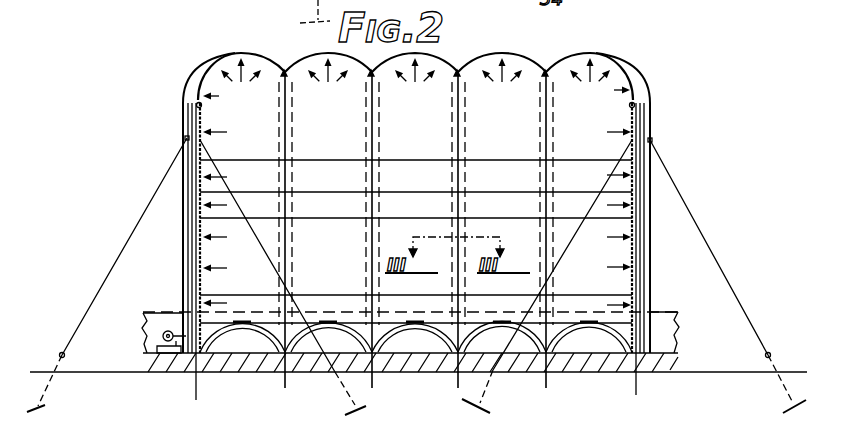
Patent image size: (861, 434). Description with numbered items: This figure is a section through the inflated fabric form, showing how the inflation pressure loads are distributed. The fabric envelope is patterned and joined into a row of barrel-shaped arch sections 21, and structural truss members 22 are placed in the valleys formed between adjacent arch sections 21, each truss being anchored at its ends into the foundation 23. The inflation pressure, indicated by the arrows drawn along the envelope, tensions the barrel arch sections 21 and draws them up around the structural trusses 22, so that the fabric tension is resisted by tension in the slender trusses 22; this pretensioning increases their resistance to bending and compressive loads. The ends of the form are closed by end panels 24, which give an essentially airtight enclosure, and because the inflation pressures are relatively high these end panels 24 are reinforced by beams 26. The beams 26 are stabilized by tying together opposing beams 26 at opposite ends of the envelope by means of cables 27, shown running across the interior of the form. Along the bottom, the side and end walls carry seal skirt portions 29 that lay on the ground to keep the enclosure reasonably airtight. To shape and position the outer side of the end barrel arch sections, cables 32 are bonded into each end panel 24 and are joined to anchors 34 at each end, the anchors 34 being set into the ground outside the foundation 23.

The barrel-shaped arch sections 21 is at (303, 55).
The structural truss members 22 is at (548, 68).
The foundation 23 is at (660, 364).
The end panels 24 is at (198, 226).
The beams 26 is at (188, 273).
The cables 27 is at (315, 218).
The seal skirt portions 29 is at (216, 352).
The cables 32 is at (199, 106).
The anchors 34 is at (195, 390).